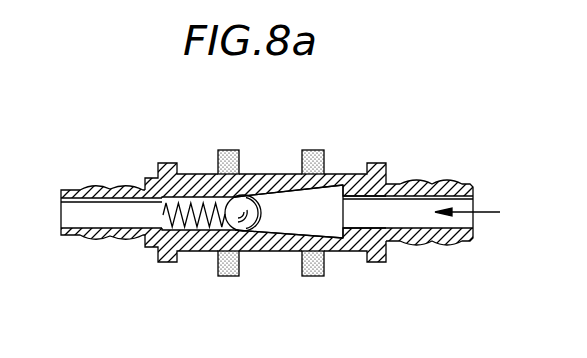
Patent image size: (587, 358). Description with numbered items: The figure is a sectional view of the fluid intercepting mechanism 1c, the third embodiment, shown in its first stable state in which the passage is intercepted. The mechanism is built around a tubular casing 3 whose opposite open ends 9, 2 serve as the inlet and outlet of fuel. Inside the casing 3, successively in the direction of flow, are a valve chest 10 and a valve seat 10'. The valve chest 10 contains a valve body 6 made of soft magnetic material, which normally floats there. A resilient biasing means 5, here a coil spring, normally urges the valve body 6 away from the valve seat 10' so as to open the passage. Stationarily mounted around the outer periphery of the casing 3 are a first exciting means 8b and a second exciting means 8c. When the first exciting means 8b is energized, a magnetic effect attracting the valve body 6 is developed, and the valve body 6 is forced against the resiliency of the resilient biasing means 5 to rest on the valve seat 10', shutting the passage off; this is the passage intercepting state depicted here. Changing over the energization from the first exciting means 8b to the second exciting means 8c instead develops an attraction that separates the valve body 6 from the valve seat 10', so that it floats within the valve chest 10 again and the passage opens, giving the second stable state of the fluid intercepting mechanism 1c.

The fluid intercepting mechanism 1c is at (303, 128).
The open end 2 is at (76, 188).
The tubular casing 3 is at (200, 180).
The resilient biasing means 5 is at (200, 236).
The valve body 6 is at (259, 233).
The first exciting means 8b is at (223, 148).
The second exciting means 8c is at (326, 163).
The open end 9 is at (456, 182).
The valve chest 10 is at (361, 242).
The valve seat 10' is at (251, 270).